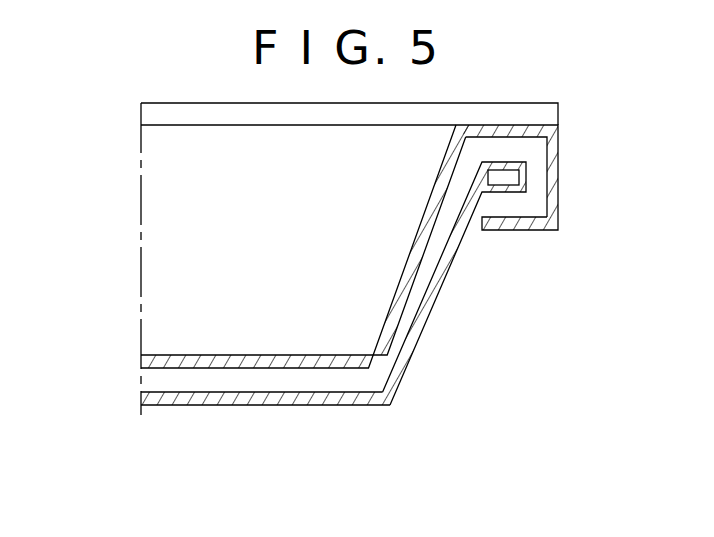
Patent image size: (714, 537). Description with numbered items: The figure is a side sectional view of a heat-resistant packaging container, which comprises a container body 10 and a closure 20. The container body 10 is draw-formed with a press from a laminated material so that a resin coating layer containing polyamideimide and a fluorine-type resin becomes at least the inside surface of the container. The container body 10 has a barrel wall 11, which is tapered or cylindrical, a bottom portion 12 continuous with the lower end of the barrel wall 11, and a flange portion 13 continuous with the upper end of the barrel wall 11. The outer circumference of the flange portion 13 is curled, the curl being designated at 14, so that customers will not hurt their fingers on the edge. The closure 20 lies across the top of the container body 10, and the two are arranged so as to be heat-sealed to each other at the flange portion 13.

The container body 10 is at (452, 287).
The barrel wall 11 is at (412, 298).
The bottom portion 12 is at (155, 378).
The flange portion 13 is at (548, 148).
The curl 14 is at (526, 222).
The closure 20 is at (148, 110).